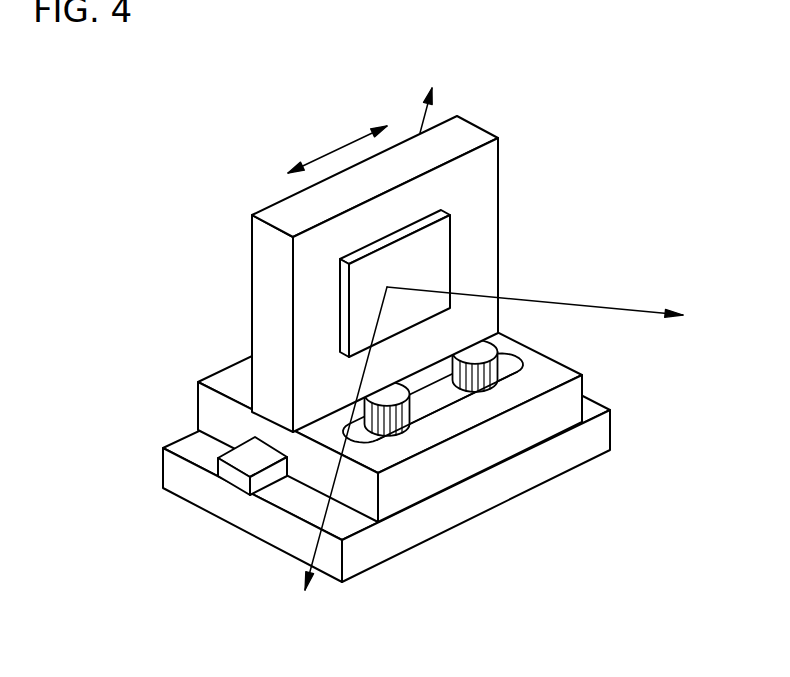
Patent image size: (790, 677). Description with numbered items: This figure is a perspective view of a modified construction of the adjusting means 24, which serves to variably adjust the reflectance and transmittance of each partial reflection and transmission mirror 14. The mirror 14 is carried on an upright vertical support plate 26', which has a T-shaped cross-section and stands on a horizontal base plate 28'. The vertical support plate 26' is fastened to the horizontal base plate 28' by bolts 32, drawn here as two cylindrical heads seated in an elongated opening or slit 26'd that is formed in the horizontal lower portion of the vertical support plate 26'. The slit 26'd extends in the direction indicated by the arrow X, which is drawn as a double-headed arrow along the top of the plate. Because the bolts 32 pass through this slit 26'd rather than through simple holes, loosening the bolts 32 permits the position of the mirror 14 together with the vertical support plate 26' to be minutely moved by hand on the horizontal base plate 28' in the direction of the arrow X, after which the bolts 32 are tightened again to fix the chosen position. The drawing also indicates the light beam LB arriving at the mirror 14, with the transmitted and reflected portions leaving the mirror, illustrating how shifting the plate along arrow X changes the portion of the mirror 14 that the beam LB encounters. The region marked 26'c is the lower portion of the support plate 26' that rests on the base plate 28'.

The adjusting means 24 is at (366, 372).
The vertical support plate 26' is at (430, 267).
The holder base portion 26'c is at (411, 433).
The opening or slit 26'd is at (469, 460).
The horizontal base plate 28' is at (179, 433).
The bolts 32 is at (398, 435).
The partial reflection and transmission mirror 14 is at (437, 250).
The arrow X direction X is at (337, 139).
The laser beam LB is at (338, 469).